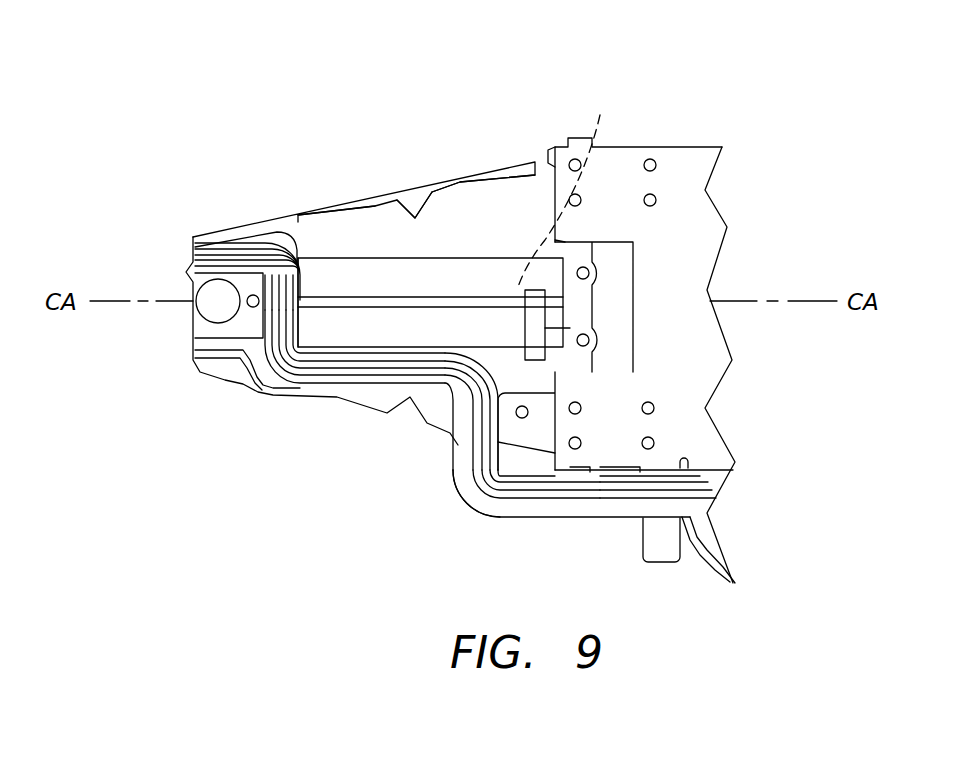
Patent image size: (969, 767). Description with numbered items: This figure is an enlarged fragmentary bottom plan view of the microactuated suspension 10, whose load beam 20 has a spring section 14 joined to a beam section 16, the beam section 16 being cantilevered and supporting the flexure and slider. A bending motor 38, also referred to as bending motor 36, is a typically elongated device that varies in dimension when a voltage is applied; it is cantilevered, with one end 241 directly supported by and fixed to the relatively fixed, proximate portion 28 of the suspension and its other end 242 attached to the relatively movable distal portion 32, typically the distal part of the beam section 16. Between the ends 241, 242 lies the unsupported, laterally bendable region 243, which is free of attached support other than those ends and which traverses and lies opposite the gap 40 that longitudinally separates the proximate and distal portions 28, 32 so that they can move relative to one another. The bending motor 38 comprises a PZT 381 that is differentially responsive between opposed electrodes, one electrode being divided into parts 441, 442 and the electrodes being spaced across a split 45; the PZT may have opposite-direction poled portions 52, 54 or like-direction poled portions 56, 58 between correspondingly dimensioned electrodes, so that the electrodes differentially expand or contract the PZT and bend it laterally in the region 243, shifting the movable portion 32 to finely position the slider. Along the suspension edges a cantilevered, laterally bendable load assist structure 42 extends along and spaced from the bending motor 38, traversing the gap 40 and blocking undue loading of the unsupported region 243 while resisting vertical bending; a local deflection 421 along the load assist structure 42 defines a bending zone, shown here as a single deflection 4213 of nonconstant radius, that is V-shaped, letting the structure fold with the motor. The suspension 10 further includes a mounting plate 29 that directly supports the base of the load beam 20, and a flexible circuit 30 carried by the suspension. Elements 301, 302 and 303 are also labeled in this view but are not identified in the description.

The microactuated suspension 10 is at (165, 222).
The relatively movable portion 32 is at (230, 222).
The beam section 16 is at (268, 223).
The opposite-direction poled portion 54 is at (272, 232).
The like-direction poled portion 58 is at (343, 273).
The PZT 381 is at (375, 257).
The local deflection 421 is at (388, 220).
The single deflection of nonconstant radius 4213 is at (415, 185).
The bending motor 36 is at (475, 143).
The bending motor 38 is at (485, 243).
The gap 40 is at (553, 200).
The split 45 is at (569, 188).
The electrode part 442 is at (547, 258).
The spring section 14 is at (697, 215).
The mounting plate 29 is at (700, 273).
The cantilevered end 242 is at (305, 272).
The directly supported end 241 is at (568, 330).
The relatively fixed portion 28 is at (545, 435).
The bottom rail 303 is at (690, 482).
The load beam 20 is at (237, 400).
The electrode part 441 is at (315, 337).
The load assist structure 42 is at (357, 412).
The opposite-direction poled portion 52 is at (410, 425).
The like-direction poled portion 56 is at (373, 330).
The unsupported bendable region 243 is at (412, 337).
The bottom wall 301 is at (505, 518).
The guard 302 is at (593, 503).
The flexible circuit 30 is at (632, 530).